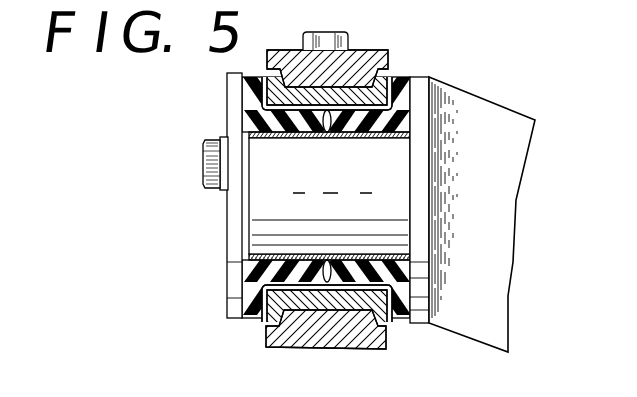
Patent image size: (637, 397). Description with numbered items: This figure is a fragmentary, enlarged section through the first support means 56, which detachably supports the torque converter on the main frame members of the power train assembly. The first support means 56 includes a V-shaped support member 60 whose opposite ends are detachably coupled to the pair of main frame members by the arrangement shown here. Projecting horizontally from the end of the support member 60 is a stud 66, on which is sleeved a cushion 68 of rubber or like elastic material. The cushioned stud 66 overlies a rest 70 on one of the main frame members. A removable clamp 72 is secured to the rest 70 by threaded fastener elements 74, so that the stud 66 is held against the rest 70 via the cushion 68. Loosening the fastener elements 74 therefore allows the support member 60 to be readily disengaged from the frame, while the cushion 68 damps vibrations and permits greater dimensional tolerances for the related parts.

The first support means 56 is at (218, 103).
The support member 60 is at (492, 116).
The stud 66 is at (260, 210).
The cushion 68 is at (408, 137).
The rest 70 is at (345, 345).
The clamp 72 is at (389, 51).
The threaded fastener elements 74 is at (312, 33).